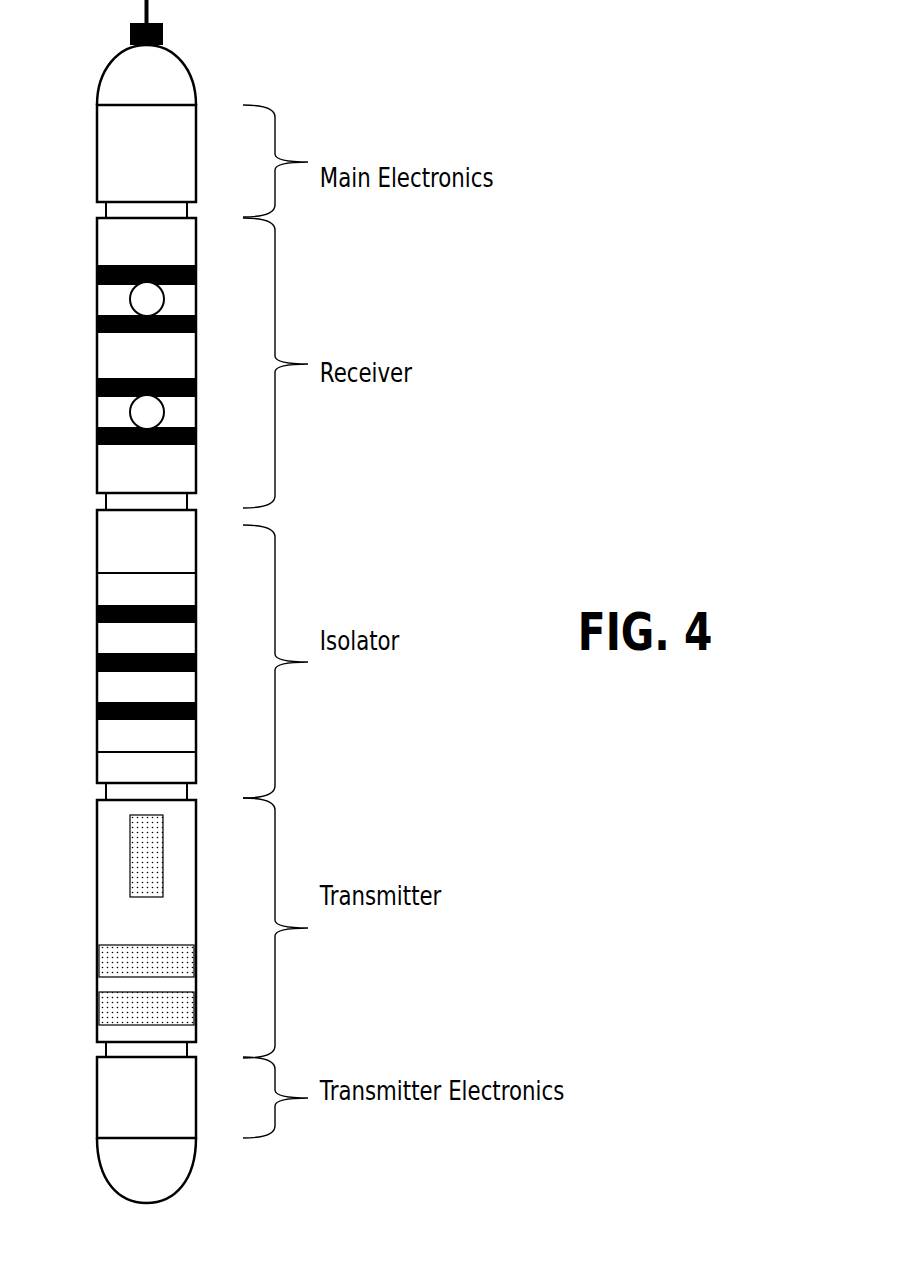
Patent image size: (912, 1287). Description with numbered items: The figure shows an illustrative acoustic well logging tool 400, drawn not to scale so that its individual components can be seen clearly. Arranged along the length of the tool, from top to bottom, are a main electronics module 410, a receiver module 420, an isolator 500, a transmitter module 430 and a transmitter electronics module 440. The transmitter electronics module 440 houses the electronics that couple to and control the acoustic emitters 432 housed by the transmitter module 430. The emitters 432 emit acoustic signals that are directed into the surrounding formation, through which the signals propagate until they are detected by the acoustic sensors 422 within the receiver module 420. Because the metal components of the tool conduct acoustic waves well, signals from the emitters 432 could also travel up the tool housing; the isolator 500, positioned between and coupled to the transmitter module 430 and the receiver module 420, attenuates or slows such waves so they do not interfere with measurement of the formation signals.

The acoustic well logging tool 400 is at (655, 52).
The main electronics module 410 is at (228, 155).
The receiver module 420 is at (228, 350).
The acoustic sensors 422 is at (128, 298).
The isolator 500 is at (228, 672).
The transmitter module 430 is at (228, 882).
The acoustic emitters 432 is at (130, 865).
The transmitter electronics module 440 is at (228, 1107).